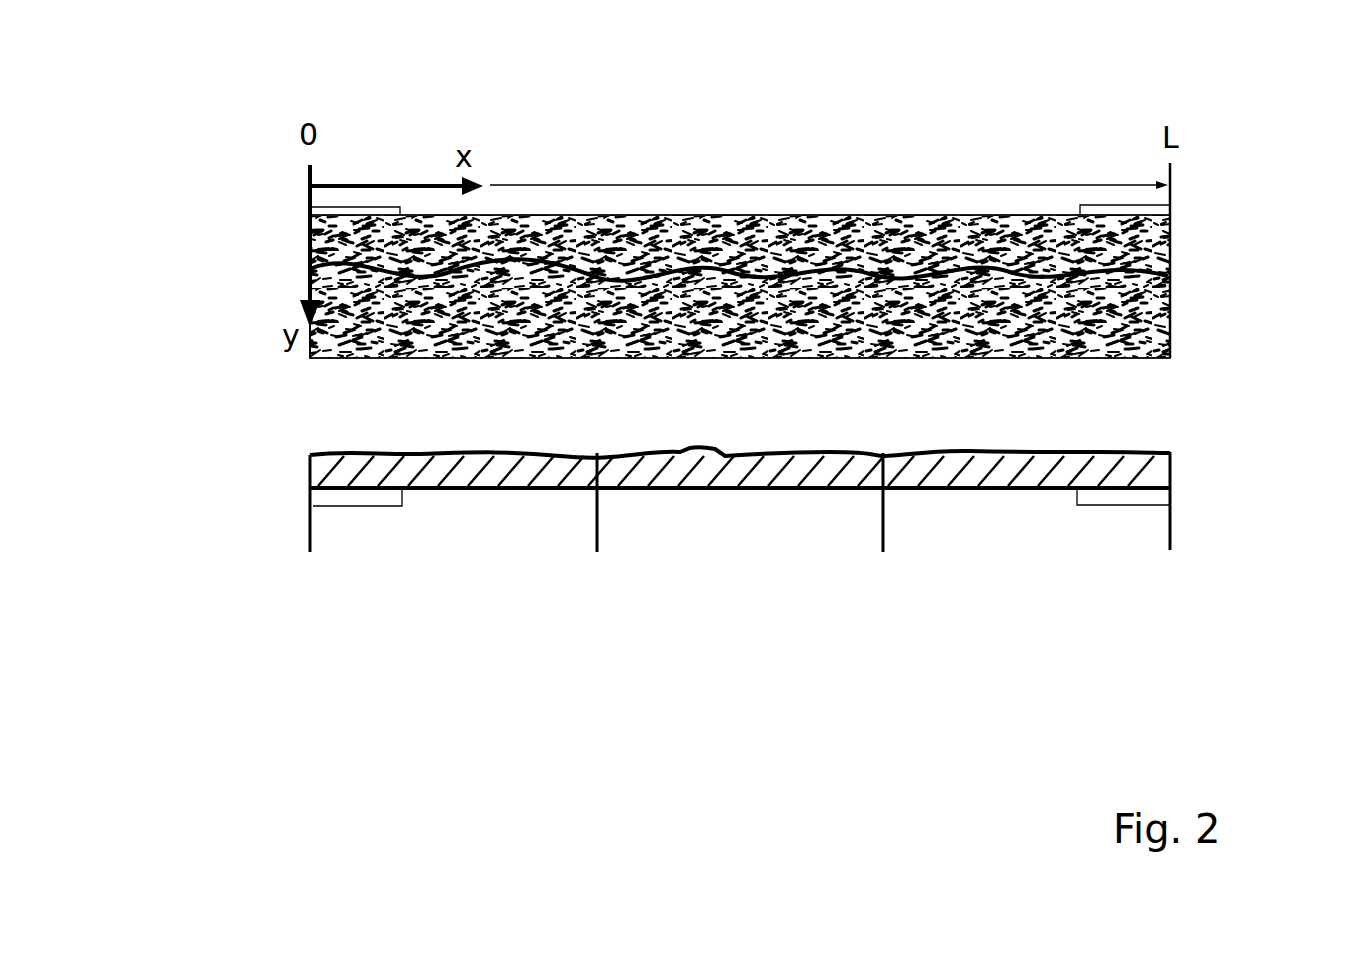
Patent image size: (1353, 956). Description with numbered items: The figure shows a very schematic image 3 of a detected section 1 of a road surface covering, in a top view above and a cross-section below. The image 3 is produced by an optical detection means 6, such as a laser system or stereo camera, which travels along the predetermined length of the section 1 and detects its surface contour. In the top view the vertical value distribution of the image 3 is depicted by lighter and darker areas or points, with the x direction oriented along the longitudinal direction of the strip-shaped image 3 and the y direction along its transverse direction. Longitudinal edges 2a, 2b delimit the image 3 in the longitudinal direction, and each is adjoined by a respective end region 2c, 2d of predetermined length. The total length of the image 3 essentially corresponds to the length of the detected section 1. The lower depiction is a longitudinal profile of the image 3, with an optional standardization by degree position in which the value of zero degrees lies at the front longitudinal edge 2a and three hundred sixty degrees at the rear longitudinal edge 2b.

The section of a road surface covering 1 is at (760, 210).
The front longitudinal edge 2a is at (308, 257).
The rear longitudinal edge 2b is at (1170, 285).
The end region 2c is at (358, 207).
The end region 2d is at (1122, 205).
The image 3 is at (918, 215).
The optical detection means 6 is at (927, 452).